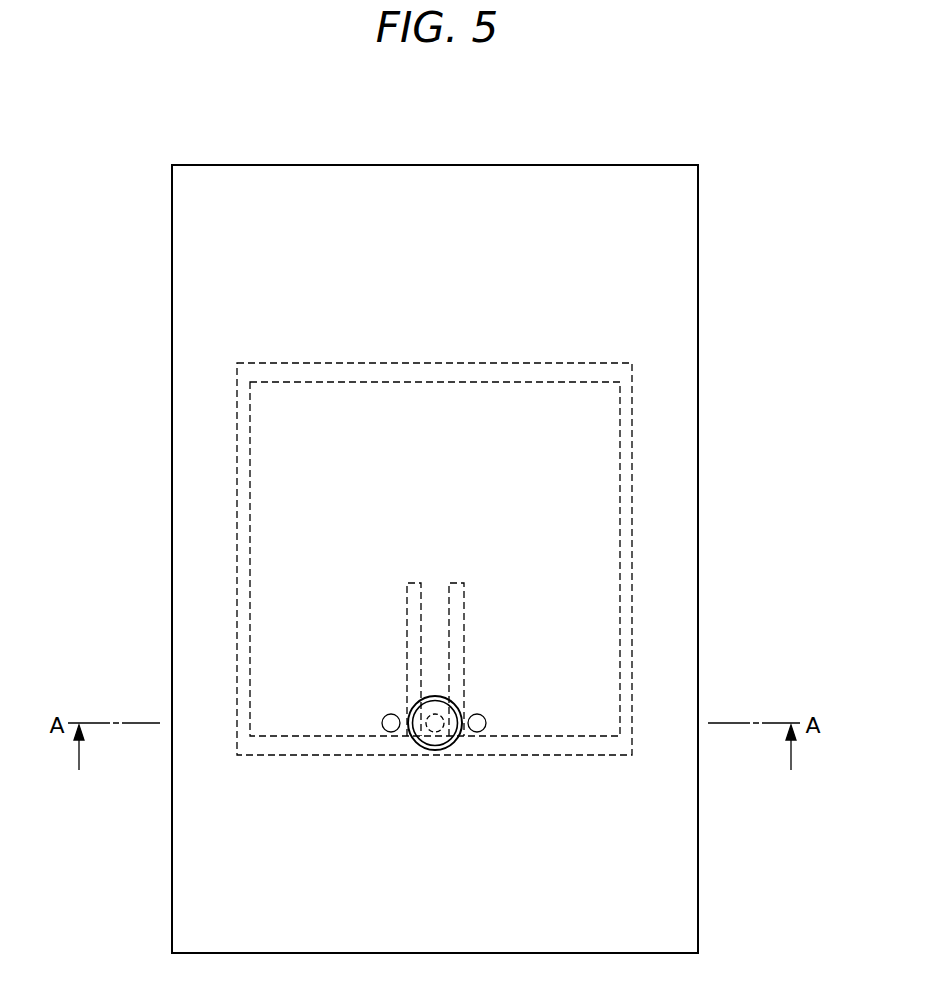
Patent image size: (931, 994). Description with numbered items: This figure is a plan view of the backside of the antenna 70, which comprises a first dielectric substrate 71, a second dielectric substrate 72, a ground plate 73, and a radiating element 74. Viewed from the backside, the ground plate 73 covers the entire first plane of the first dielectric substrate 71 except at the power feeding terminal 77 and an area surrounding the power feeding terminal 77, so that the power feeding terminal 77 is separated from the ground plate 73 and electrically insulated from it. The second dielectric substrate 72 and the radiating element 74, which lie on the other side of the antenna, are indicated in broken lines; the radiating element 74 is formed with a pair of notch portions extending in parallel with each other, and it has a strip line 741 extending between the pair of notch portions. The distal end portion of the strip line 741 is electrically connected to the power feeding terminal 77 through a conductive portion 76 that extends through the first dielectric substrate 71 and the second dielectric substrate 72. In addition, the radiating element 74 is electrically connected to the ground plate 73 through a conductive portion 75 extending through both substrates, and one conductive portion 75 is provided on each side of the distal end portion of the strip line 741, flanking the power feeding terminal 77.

The antenna 70 is at (203, 163).
The first dielectric substrate 71 is at (700, 260).
The second dielectric substrate 72 is at (623, 374).
The ground plate 73 is at (676, 214).
The radiating element 74 is at (603, 595).
The strip line 741 is at (437, 660).
The conductive portion 75 is at (387, 731).
The conductive portion 76 is at (424, 740).
The power feeding terminal 77 is at (437, 746).